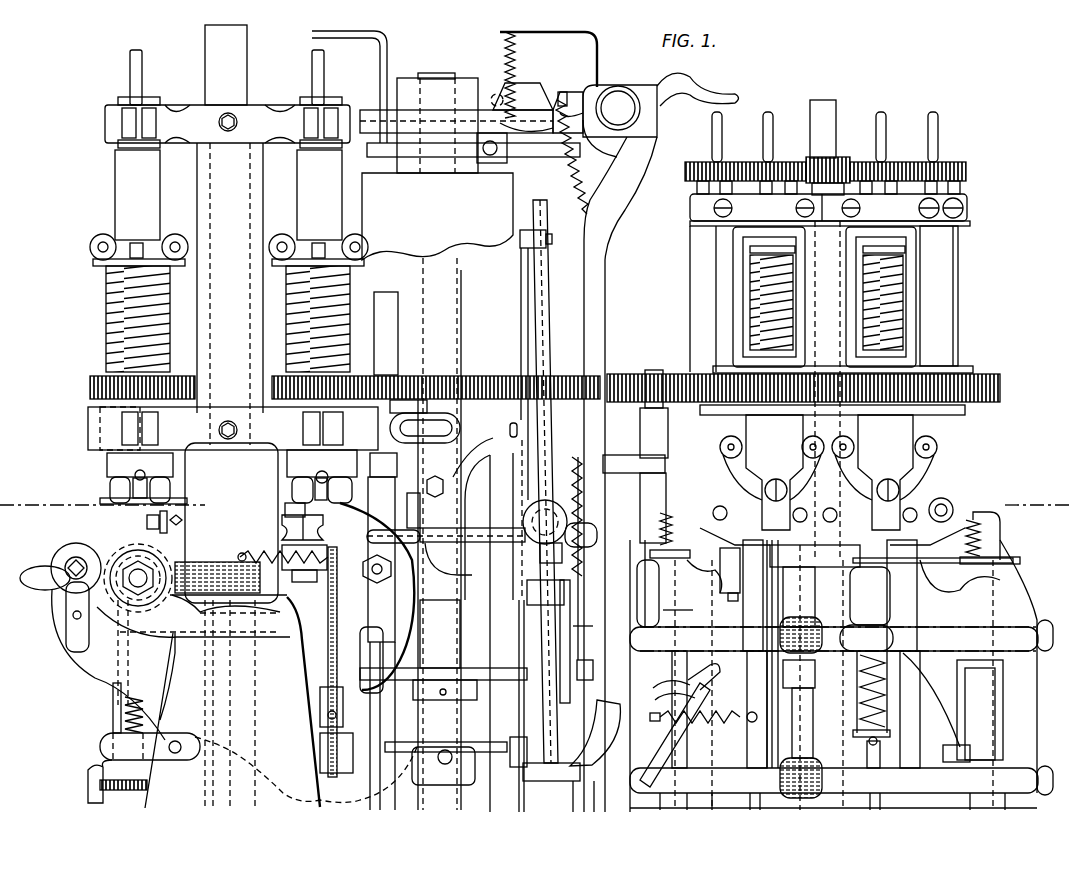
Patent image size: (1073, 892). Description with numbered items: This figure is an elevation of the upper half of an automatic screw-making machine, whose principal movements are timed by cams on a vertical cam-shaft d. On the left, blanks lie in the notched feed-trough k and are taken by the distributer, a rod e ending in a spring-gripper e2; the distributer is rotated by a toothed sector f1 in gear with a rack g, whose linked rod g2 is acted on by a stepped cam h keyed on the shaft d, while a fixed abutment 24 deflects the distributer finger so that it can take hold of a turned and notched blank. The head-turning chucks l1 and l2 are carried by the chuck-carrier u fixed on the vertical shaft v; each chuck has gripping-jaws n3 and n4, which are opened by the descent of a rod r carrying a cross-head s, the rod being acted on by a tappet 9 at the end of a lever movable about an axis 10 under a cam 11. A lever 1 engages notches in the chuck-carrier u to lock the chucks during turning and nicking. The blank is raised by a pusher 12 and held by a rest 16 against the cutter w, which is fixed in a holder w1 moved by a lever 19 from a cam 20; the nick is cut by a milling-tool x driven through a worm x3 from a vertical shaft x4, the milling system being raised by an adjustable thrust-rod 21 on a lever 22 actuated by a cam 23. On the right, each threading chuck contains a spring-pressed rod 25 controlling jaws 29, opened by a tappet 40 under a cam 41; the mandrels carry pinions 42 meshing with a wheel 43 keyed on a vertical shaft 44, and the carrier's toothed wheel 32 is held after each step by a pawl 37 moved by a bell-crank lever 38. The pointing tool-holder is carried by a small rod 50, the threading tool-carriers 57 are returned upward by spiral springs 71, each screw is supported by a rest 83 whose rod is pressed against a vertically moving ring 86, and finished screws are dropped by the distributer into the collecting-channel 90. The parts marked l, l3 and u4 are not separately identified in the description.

The lever 1 is at (395, 398).
The tappet 9 is at (376, 56).
The axis 10 is at (622, 92).
The cam 11 is at (522, 125).
The pusher 12 is at (328, 660).
The rest 16 is at (290, 522).
The lever 19 is at (478, 668).
The cam 20 is at (410, 680).
The thrust-rod 21 is at (113, 703).
The lever 22 is at (105, 745).
The cam 23 is at (470, 745).
The fixed abutment 24 is at (335, 520).
The vertically-movable rod 25 is at (722, 128).
The jaws 29 is at (955, 508).
The toothed wheel 32 is at (1000, 386).
The pawl 37 is at (654, 378).
The bell-crank lever 38 is at (620, 457).
The tappet 40 is at (705, 92).
The cam 41 is at (432, 118).
The pinion 42 is at (690, 170).
The wheel 43 is at (838, 158).
The vertical shaft 44 is at (812, 112).
The vertical rod 50 is at (800, 602).
The tool-carriers 57 is at (1020, 565).
The spiral springs 71 is at (982, 530).
The rest 83 is at (693, 610).
The ring 86 is at (843, 802).
The collecting-channel 90 is at (698, 725).
The vertical cam-shaft d is at (415, 534).
The distributer rod e is at (547, 353).
The spring-gripper e2 is at (552, 774).
The toothed sector f1 is at (570, 533).
The rack g is at (565, 528).
The rod g2 is at (524, 290).
The cam h is at (437, 216).
The feed-trough k is at (610, 705).
The gear rack l is at (90, 385).
The chuck l1 is at (380, 457).
The chuck l2 is at (628, 336).
The column l3 is at (493, 626).
The gripping-jaw n3 is at (135, 503).
The gripping-jaw n4 is at (137, 507).
The rod r is at (143, 58).
The cross-head s is at (136, 243).
The chuck-carrier u is at (176, 118).
The lower cross bar u4 is at (100, 428).
The vertical shaft v is at (230, 417).
The cutter w is at (565, 515).
The holder w1 is at (347, 543).
The milling-tool x is at (108, 555).
The worm x3 is at (178, 575).
The vertical shaft x4 is at (156, 704).